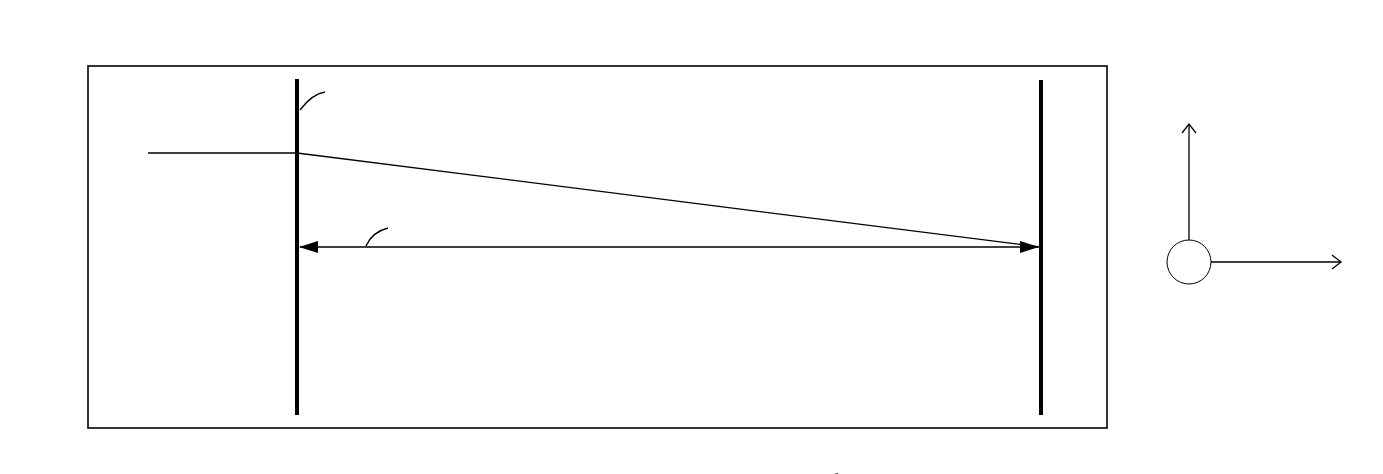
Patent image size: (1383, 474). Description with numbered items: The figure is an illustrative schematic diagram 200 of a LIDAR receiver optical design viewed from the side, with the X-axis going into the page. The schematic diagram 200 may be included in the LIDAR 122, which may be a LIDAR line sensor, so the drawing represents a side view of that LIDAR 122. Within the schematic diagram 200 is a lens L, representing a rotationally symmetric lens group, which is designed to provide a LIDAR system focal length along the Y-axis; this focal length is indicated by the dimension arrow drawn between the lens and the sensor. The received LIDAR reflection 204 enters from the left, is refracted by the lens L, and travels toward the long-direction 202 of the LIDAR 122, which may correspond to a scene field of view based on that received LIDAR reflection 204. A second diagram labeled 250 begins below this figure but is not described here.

The schematic diagram 200 is at (208, 38).
The LIDAR 122 is at (818, 66).
The long-direction 202 is at (1044, 131).
The LIDAR reflection 204 is at (428, 168).
The imaging system (second configuration) 250 is at (208, 473).